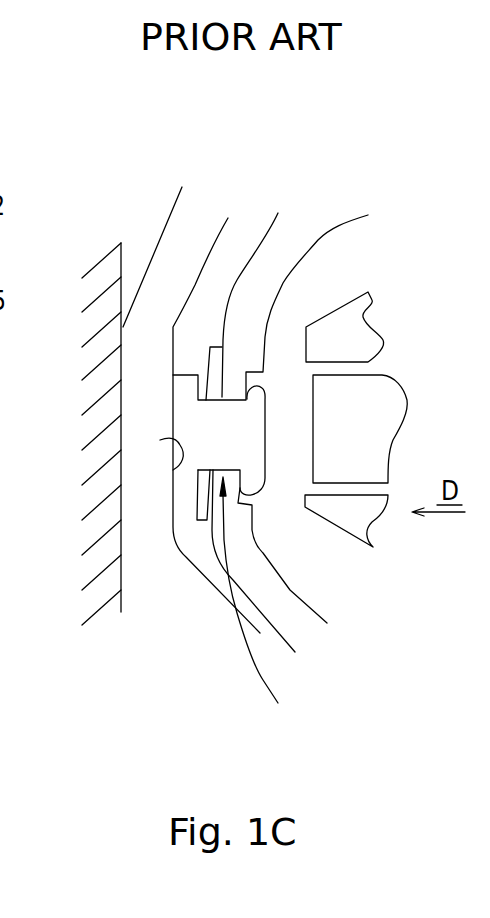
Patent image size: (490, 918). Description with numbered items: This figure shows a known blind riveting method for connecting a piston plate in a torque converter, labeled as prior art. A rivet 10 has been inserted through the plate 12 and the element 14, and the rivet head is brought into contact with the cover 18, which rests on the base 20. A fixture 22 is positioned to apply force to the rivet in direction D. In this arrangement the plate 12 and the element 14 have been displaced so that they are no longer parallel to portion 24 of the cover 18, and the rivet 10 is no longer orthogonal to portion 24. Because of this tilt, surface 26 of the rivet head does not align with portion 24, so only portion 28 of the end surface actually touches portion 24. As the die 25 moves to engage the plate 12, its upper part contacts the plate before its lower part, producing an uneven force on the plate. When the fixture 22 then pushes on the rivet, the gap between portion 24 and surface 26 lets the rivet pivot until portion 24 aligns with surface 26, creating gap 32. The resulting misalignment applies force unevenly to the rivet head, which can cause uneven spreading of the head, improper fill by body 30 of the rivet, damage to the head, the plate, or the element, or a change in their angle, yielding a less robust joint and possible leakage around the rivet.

The rivet 10 is at (260, 604).
The plate 12 is at (286, 412).
The element 14 is at (213, 347).
The cover 18 is at (153, 248).
The base 20 is at (112, 270).
The fixture 22 is at (358, 428).
The portion of the cover 24 is at (150, 358).
The die 25 is at (358, 340).
The surface of the rivet head 26 is at (160, 440).
The portion of the end surface 28 is at (197, 486).
The body of the rivet 30 is at (233, 440).
The gap 32 is at (203, 373).